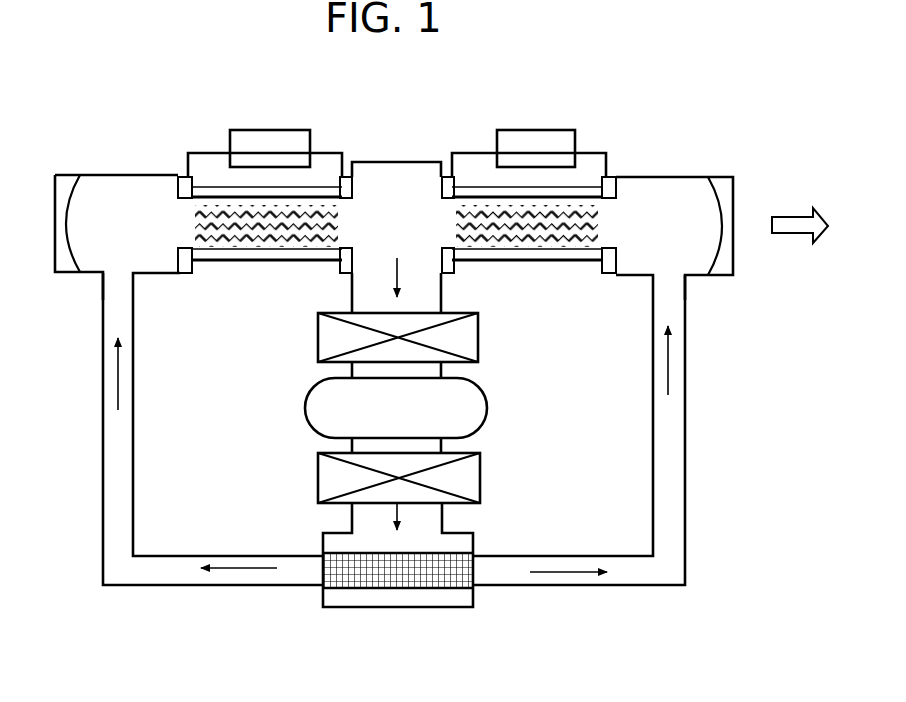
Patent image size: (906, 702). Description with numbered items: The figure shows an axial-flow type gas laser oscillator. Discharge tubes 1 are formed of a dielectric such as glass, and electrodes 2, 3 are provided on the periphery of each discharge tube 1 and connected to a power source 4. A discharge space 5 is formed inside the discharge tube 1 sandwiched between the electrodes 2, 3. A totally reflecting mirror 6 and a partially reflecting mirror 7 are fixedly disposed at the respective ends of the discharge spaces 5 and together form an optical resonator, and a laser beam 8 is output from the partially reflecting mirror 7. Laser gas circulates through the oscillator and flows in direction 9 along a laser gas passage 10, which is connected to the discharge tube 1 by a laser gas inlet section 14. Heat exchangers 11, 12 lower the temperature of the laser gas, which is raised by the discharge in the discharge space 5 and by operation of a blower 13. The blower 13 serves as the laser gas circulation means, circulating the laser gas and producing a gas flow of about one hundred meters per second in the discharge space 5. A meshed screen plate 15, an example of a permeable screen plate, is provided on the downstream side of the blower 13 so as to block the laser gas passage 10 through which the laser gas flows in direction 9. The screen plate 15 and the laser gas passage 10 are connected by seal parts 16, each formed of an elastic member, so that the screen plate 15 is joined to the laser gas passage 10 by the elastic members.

The discharge tube 1 is at (250, 262).
The electrode 2 is at (182, 273).
The electrode 3 is at (338, 268).
The power source 4 is at (275, 130).
The discharge space 5 is at (237, 213).
The totally reflecting mirror 6 is at (63, 273).
The partially reflecting mirror 7 is at (723, 177).
The laser beam 8 is at (787, 232).
The direction 9 is at (118, 370).
The laser gas passage 10 is at (135, 440).
The heat exchanger 11 is at (478, 345).
The heat exchanger 12 is at (480, 480).
The blower 13 is at (487, 422).
The laser gas inlet section 14 is at (110, 275).
The meshed screen plate 15 is at (392, 577).
The seal part 16 is at (323, 587).